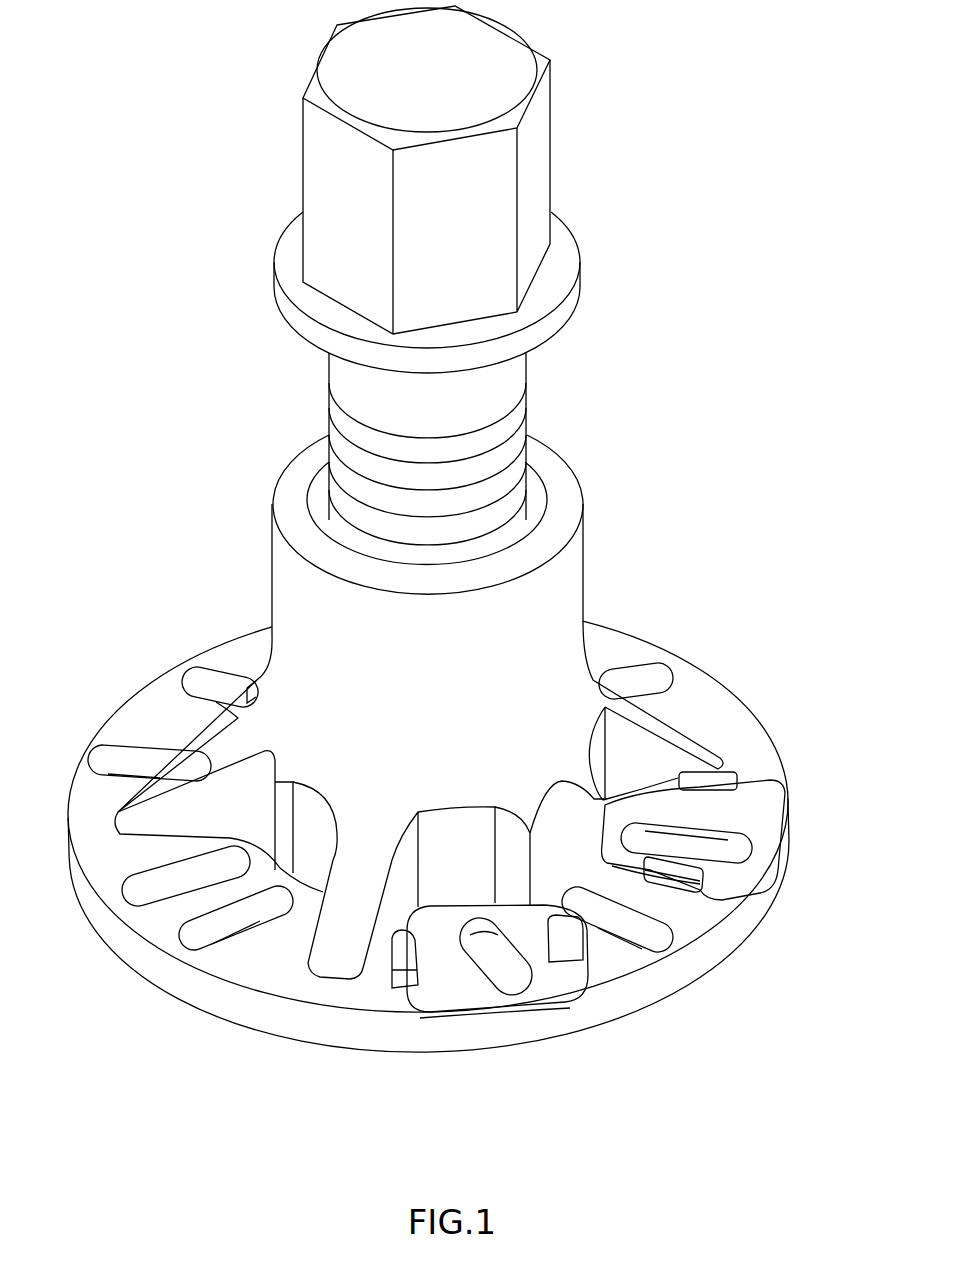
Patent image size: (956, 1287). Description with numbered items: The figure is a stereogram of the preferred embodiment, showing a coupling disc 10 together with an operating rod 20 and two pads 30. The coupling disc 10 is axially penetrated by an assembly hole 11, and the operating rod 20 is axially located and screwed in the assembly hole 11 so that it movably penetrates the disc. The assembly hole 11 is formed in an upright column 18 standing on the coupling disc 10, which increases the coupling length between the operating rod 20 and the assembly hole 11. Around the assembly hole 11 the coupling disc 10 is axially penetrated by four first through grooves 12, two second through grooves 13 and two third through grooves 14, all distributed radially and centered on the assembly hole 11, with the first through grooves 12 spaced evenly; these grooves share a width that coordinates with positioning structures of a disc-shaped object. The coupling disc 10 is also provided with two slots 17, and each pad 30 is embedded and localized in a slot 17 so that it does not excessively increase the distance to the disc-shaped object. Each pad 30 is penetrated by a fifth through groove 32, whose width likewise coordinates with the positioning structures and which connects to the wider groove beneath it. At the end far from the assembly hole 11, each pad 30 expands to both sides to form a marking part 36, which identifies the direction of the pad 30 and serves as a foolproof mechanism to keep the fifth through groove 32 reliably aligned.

The coupling disc 10 is at (630, 638).
The assembly hole 11 is at (330, 528).
The first through grooves 12 is at (198, 672).
The second through grooves 13 is at (128, 897).
The third through grooves 14 is at (100, 757).
The slots 17 is at (387, 1003).
The upright column 18 is at (582, 570).
The operating rod 20 is at (510, 388).
The pads 30 is at (708, 807).
The fifth through groove 32 is at (728, 830).
The marking part 36 is at (733, 893).